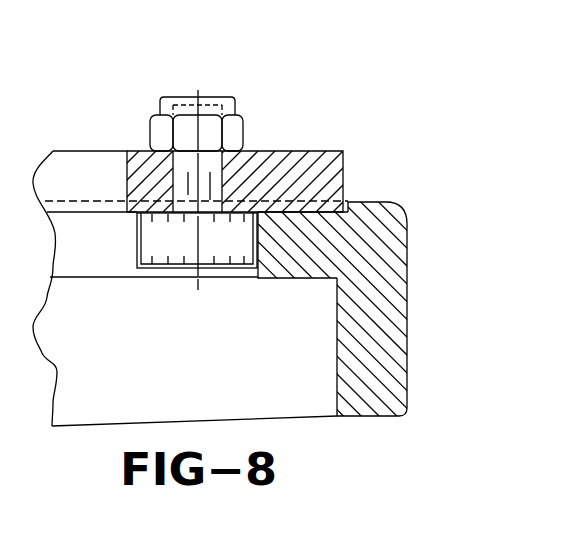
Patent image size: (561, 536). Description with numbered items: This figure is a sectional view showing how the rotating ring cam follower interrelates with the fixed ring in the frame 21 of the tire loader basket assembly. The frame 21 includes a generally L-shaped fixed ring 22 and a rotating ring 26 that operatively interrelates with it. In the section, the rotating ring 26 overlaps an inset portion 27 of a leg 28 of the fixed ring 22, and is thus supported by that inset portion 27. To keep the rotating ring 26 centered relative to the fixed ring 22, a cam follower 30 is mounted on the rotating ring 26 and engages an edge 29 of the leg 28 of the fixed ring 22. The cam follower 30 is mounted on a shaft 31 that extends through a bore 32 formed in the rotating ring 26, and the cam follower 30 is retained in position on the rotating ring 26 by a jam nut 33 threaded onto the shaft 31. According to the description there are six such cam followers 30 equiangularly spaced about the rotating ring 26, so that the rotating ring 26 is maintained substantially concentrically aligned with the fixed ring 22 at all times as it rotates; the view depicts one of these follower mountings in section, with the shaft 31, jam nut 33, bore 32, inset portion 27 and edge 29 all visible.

The frame 21 is at (376, 201).
The fixed ring 22 is at (368, 335).
The rotating ring 26 is at (307, 165).
The inset portion 27 is at (308, 212).
The leg 28 is at (313, 243).
The edge 29 is at (255, 275).
The cam follower 30 is at (230, 230).
The shaft 31 is at (188, 183).
The bore 32 is at (160, 183).
The jam nut 33 is at (203, 125).